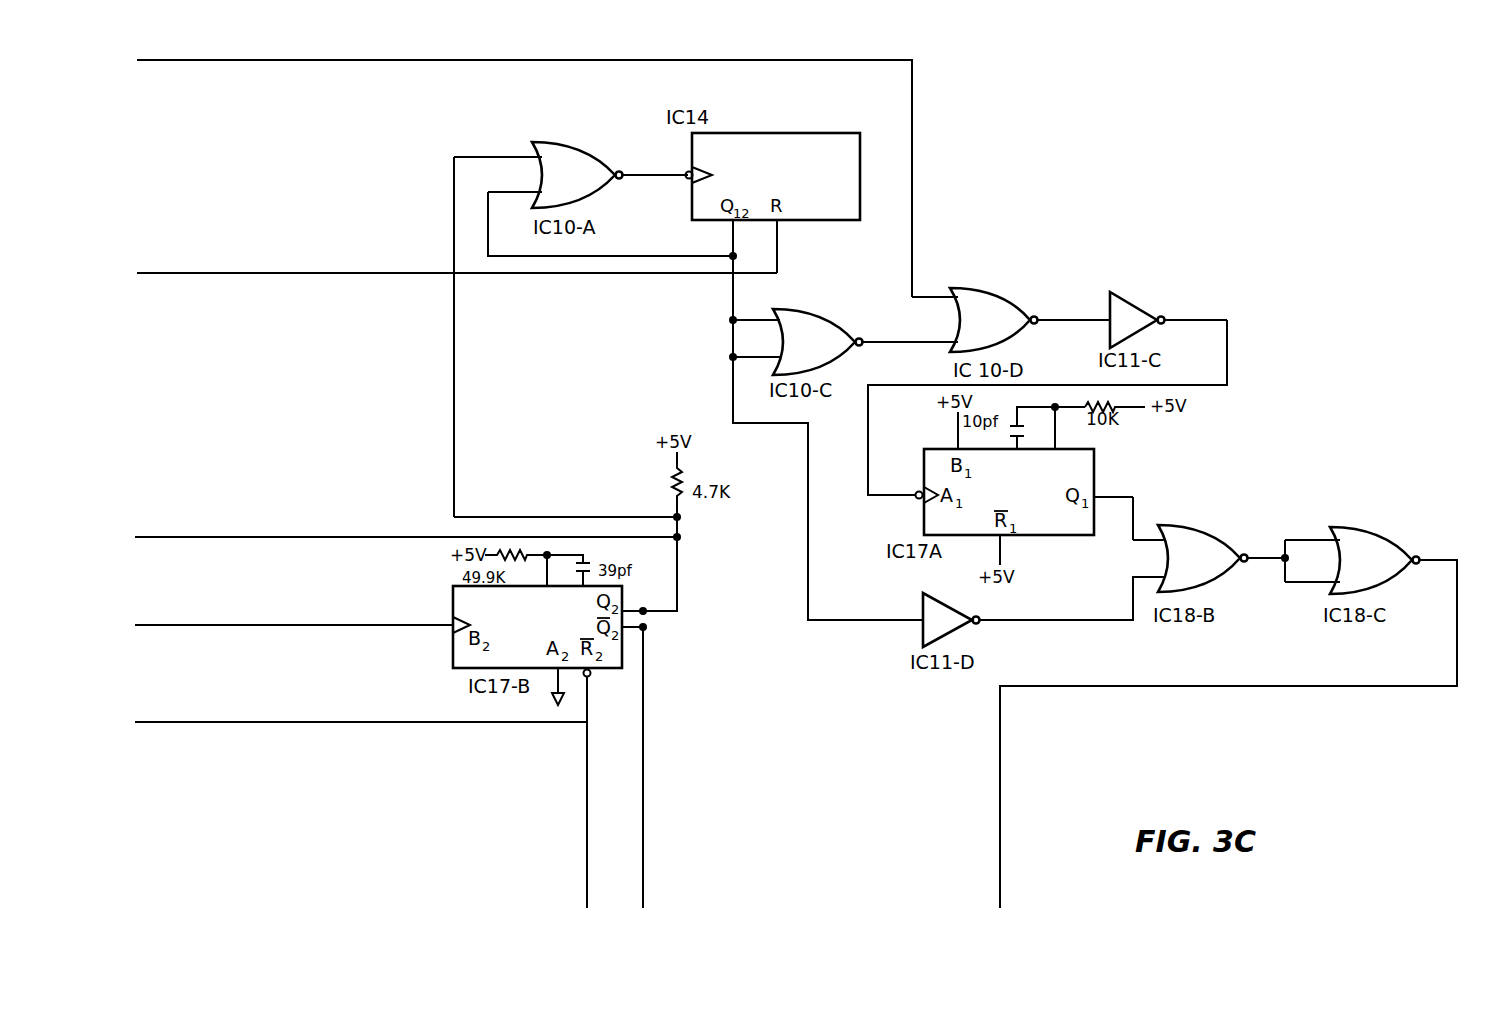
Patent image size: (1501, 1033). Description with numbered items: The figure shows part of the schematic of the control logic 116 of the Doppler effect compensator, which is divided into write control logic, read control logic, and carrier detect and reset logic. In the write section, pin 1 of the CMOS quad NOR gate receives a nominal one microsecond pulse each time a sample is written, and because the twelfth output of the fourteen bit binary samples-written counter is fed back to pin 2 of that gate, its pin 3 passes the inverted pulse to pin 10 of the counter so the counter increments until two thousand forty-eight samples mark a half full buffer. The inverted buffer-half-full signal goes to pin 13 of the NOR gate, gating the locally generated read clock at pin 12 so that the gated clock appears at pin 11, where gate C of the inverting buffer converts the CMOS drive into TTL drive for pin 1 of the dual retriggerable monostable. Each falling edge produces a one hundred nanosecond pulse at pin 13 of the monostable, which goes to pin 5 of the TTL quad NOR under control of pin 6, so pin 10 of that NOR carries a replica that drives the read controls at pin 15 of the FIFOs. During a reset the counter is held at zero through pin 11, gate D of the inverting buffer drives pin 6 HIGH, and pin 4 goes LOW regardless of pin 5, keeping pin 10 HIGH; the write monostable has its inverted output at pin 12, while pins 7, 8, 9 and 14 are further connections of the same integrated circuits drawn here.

The control logic 116 is at (301, 185).
The pin 1 is at (684, 315).
The pin 2 is at (718, 310).
The pin 3 is at (808, 357).
The pin 4 is at (1266, 547).
The pin 5 is at (896, 563).
The pin 6 is at (894, 441).
The pin 7 is at (818, 441).
The pin 8 is at (1023, 418).
The pin 9 is at (926, 517).
The pin 10 is at (933, 387).
The pin 11 is at (826, 457).
The pin 12 is at (790, 463).
The pin 13 is at (1026, 408).
The pin 14 is at (1003, 441).
The pin 15 is at (1040, 429).